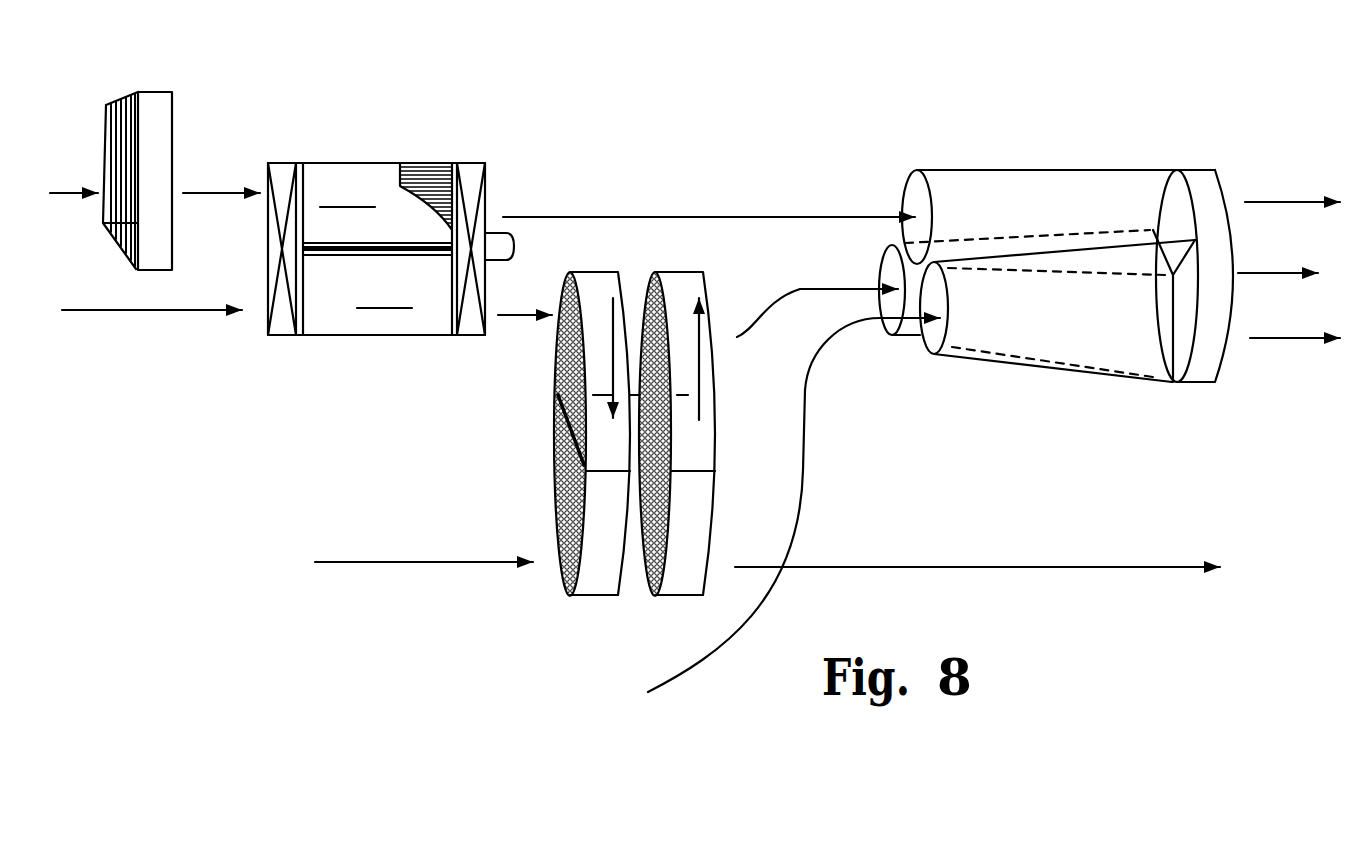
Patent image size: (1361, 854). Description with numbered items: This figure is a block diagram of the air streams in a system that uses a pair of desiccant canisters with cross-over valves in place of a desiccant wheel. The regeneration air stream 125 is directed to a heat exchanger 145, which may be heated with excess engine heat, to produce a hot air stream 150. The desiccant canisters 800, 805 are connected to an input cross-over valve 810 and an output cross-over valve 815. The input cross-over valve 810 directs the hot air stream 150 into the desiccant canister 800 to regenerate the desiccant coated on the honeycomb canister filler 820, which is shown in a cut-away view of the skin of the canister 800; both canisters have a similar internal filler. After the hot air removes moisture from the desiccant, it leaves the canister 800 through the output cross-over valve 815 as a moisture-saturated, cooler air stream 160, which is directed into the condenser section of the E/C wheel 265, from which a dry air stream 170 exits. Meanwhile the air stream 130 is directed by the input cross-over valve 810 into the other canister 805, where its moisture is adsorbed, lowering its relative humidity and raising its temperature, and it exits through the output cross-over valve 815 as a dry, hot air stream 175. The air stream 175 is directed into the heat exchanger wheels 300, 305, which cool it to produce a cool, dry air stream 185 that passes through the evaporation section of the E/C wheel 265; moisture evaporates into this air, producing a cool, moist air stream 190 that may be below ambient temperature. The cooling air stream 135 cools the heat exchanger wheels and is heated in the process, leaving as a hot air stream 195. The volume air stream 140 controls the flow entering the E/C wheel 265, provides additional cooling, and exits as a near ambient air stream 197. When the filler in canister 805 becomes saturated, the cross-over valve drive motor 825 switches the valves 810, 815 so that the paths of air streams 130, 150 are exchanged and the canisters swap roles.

The regeneration air stream 125 is at (68, 195).
The air stream 130 is at (215, 310).
The cooling air stream 135 is at (445, 562).
The volume air stream 140 is at (804, 395).
The heat exchanger 145 is at (105, 150).
The hot air stream 150 is at (215, 193).
The warm, moist air stream 160 is at (822, 217).
The dry air stream 170 is at (1280, 202).
The hot, dry air stream 175 is at (508, 315).
The cool, dry air stream 185 is at (792, 290).
The cool, moist air stream 190 is at (1270, 273).
The hot air stream 195 is at (1015, 567).
The near ambient air stream 197 is at (1283, 338).
The E/C wheel 265 is at (1202, 170).
The heat exchanger wheel 300 is at (598, 597).
The heat exchanger wheel 305 is at (683, 598).
The desiccant canister 800 is at (377, 203).
The desiccant canister 805 is at (377, 295).
The input cross-over valve 810 is at (287, 336).
The output cross-over valve 815 is at (472, 163).
The honeycomb canister filler 820 is at (420, 178).
The cross-over valve drive motor 825 is at (518, 255).